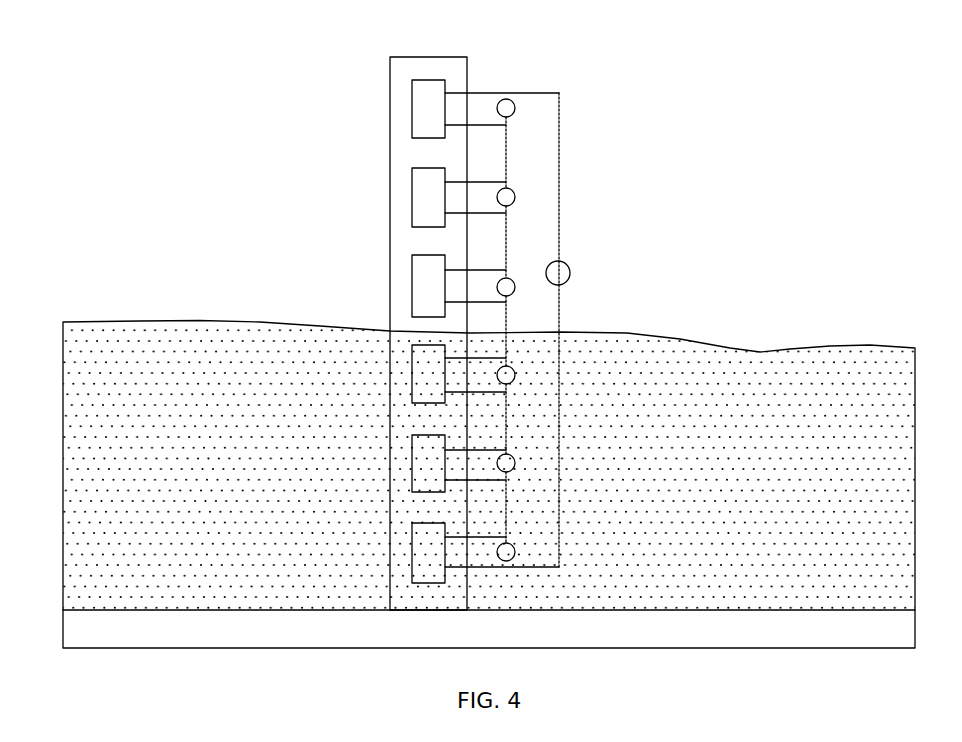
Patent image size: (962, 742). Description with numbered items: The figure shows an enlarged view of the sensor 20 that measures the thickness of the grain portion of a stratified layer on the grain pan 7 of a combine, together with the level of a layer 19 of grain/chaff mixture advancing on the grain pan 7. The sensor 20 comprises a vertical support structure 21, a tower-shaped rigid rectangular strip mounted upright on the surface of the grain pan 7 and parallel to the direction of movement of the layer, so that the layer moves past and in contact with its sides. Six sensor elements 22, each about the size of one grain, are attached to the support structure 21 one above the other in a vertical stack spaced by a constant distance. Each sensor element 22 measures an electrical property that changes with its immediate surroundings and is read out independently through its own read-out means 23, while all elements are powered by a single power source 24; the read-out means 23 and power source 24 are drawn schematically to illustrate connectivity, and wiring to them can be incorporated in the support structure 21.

The grain pan 7 is at (73, 632).
The layer of grain/chaff mixture 19 is at (193, 352).
The sensor 20 is at (367, 69).
The vertical support structure 21 is at (453, 69).
The sensor elements 22 is at (427, 368).
The read-out means 23 is at (513, 197).
The power source 24 is at (560, 272).